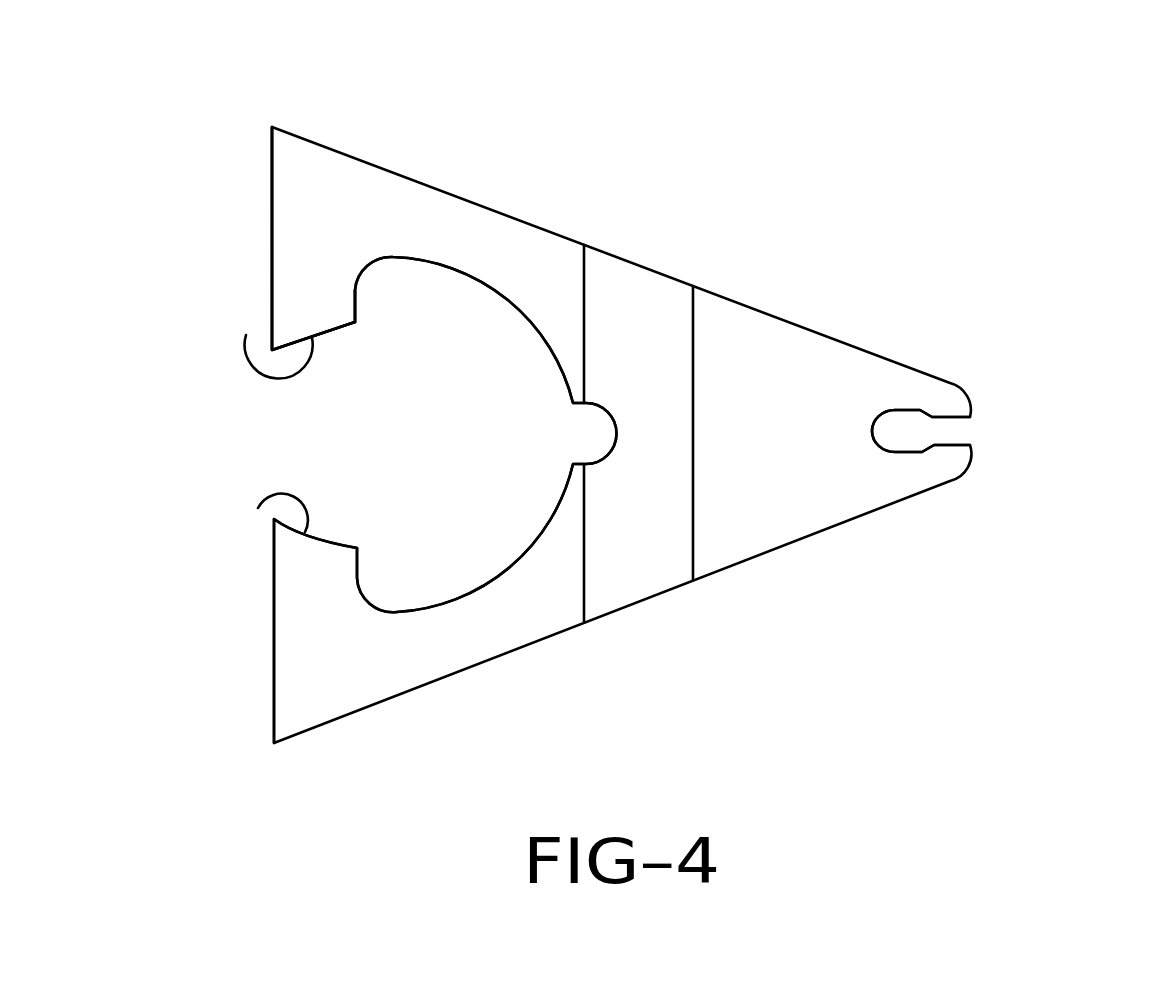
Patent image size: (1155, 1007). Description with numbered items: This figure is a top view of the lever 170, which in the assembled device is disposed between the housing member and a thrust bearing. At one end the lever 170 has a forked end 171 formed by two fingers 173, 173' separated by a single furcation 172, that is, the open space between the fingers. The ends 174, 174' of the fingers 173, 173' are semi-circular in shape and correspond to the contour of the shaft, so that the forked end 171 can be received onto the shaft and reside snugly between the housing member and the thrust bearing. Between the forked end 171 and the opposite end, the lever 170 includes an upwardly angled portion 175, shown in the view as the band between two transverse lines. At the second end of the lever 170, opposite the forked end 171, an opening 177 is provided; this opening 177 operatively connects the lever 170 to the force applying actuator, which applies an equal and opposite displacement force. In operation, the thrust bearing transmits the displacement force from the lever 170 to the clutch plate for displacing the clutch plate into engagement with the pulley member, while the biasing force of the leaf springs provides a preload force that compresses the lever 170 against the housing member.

The lever 170 is at (792, 252).
The forked end 171 is at (246, 217).
The furcation 172 is at (307, 453).
The finger 173 is at (276, 191).
The finger 173' is at (275, 631).
The end of finger 174 is at (227, 328).
The end of finger 174' is at (220, 527).
The upwardly angled portion 175 is at (630, 285).
The opening 177 is at (908, 425).